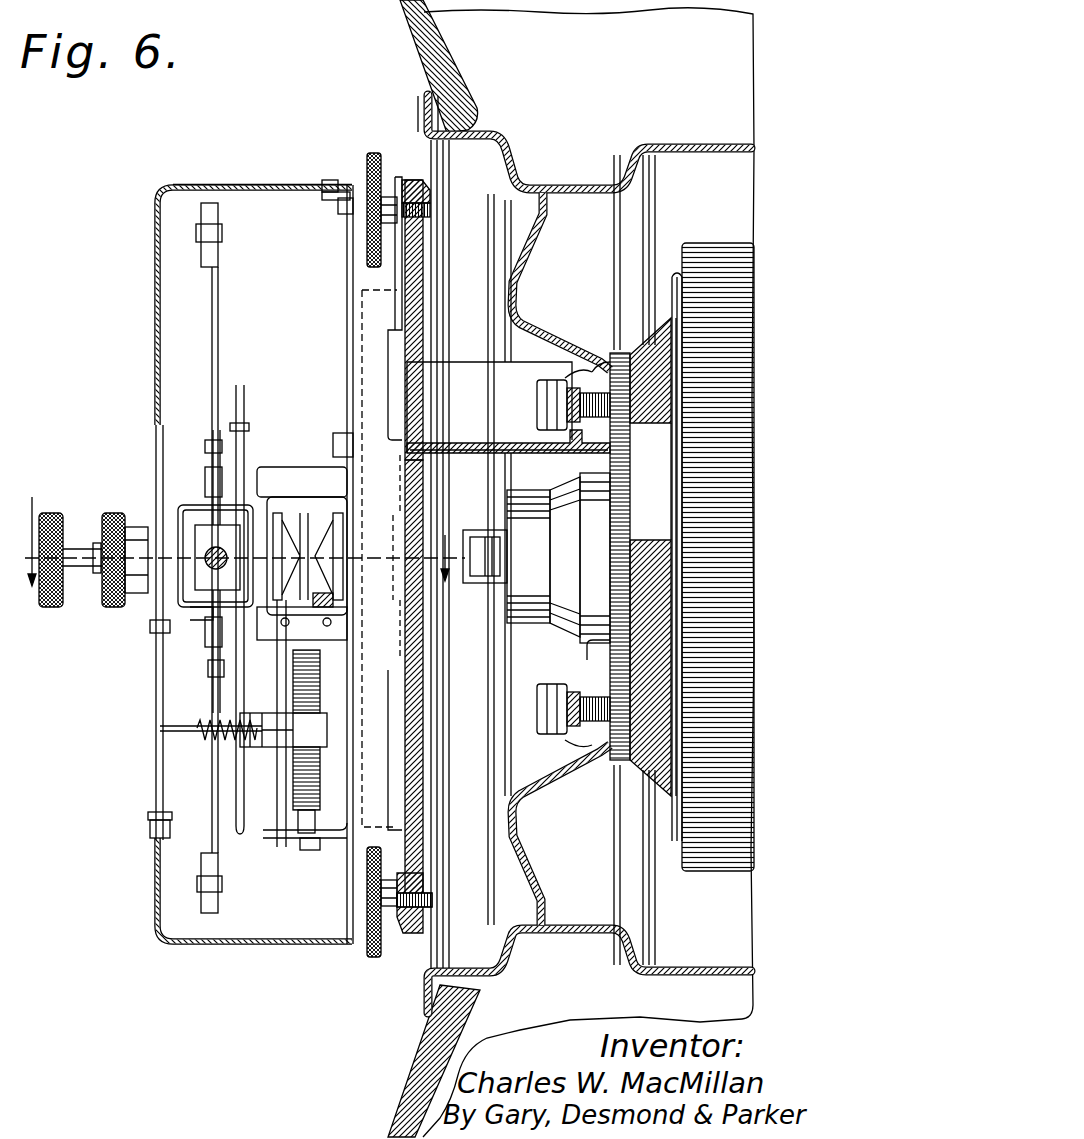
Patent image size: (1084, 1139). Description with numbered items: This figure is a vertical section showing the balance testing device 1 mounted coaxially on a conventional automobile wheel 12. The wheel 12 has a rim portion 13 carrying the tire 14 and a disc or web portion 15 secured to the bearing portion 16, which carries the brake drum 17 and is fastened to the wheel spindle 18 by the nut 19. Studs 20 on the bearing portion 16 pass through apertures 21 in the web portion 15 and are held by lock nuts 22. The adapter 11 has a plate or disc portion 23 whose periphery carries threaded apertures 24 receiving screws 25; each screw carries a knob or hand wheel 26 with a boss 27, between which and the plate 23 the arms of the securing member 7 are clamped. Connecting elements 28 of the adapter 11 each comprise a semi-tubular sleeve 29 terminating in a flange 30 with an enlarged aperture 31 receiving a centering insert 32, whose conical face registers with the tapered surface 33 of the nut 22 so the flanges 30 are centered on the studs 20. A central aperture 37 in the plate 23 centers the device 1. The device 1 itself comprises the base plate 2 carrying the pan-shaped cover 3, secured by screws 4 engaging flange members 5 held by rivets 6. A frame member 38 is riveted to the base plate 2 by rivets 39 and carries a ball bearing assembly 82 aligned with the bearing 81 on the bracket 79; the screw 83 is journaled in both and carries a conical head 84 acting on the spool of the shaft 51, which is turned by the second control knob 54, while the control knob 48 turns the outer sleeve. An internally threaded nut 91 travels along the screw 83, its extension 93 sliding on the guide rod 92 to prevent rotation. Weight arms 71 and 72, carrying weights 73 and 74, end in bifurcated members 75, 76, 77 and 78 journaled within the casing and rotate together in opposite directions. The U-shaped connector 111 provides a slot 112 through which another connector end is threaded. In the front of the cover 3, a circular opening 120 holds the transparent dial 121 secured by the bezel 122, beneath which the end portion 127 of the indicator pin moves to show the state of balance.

The balance testing device 1 is at (147, 323).
The base plate 2 is at (347, 262).
The cover 3 is at (222, 186).
The screws 4 is at (333, 182).
The flange members 5 is at (322, 197).
The rivets 6 is at (340, 211).
The securing member 7 is at (243, 534).
The adapter 11 is at (420, 720).
The automobile wheel 12 is at (416, 109).
The rim portion 13 is at (513, 172).
The tire 14 is at (410, 42).
The disc or web portion 15 is at (540, 275).
The bearing portion 16 is at (640, 340).
The brake drum 17 is at (710, 243).
The wheel spindle 18 is at (460, 530).
The nut 19 is at (492, 588).
The studs 20 is at (600, 400).
The apertures 21 is at (592, 740).
The lock nuts 22 is at (572, 686).
The plate or disc portion 23 is at (418, 300).
The threaded apertures 24 is at (430, 192).
The screws 25 is at (432, 210).
The knobs or hand wheels 26 is at (375, 156).
The boss 27 is at (393, 195).
The connecting elements 28 is at (470, 442).
The sleeve 29 is at (507, 443).
The flange 30 is at (579, 370).
The apertures 31 is at (570, 370).
The centering inserts 32 is at (592, 373).
The tapered surface 33 is at (548, 390).
The central aperture 37 is at (418, 525).
The frame member 38 is at (290, 467).
The rivets 39 is at (322, 435).
The control knob 48 is at (118, 512).
The shaft 51 is at (78, 572).
The second control knob 54 is at (66, 520).
The weight arm 71 is at (218, 333).
The weight arm 72 is at (212, 777).
The weight 73 is at (204, 255).
The weight 74 is at (204, 860).
The bifurcated member 75 is at (190, 510).
The bifurcated member 76 is at (220, 500).
The bifurcated member 77 is at (198, 612).
The bifurcated member 78 is at (208, 640).
The bracket 79 is at (335, 836).
The bearing 81 is at (300, 842).
The ball bearing assembly 82 is at (275, 628).
The screw 83 is at (320, 780).
The conical head 84 is at (313, 598).
The nut 91 is at (330, 745).
The guide rod 92 is at (278, 780).
The extension 93 is at (275, 750).
The connector 111 is at (236, 770).
The slot 112 is at (238, 805).
The circular opening 120 is at (155, 816).
The transparent dial 121 is at (156, 688).
The bezel 122 is at (150, 828).
The end portion of indicator pin 127 is at (170, 727).